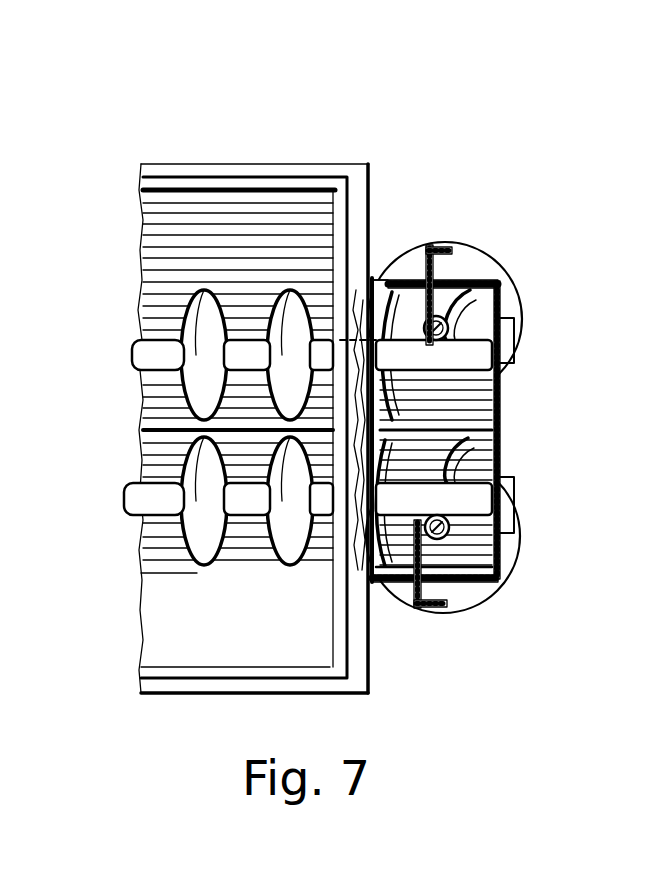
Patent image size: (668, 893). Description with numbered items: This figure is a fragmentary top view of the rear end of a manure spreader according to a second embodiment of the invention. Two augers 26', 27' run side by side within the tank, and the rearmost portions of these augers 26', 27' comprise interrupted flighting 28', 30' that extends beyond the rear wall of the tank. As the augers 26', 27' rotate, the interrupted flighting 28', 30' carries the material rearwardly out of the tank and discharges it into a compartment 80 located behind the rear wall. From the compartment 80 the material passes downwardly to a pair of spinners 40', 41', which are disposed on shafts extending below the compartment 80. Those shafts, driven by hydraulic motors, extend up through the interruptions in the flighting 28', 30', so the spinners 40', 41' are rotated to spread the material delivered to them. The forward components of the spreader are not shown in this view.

The auger 27' is at (232, 236).
The auger 26' is at (188, 545).
The spinner 41' is at (498, 268).
The interrupted flighting 30' is at (496, 343).
The compartment 80 is at (500, 415).
The interrupted flighting 28' is at (505, 523).
The spinner 40' is at (455, 461).